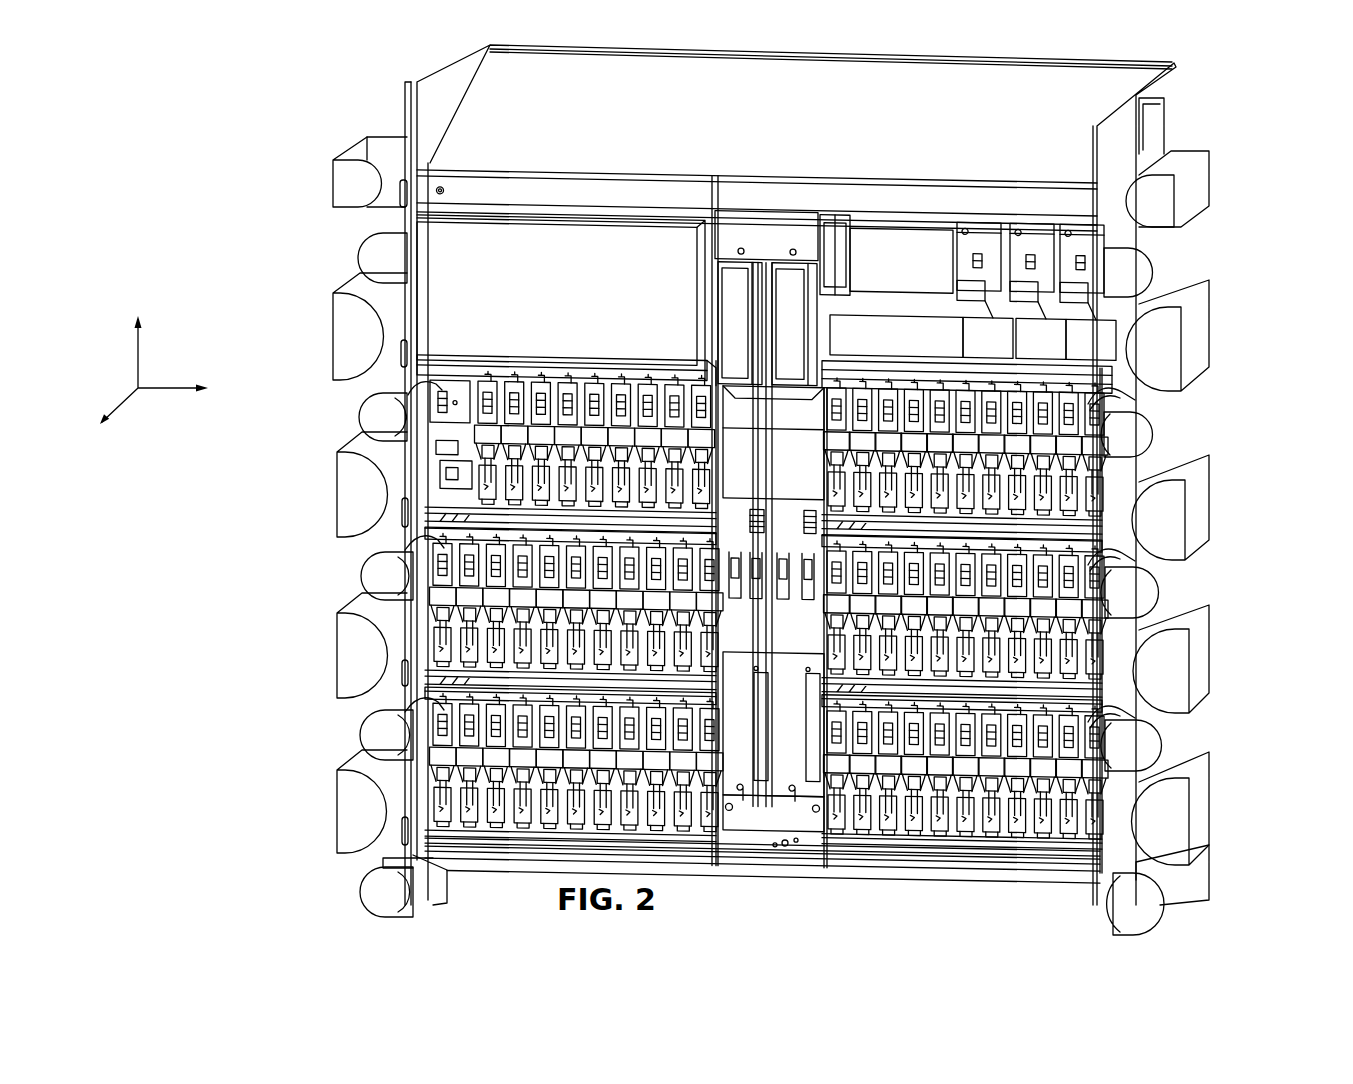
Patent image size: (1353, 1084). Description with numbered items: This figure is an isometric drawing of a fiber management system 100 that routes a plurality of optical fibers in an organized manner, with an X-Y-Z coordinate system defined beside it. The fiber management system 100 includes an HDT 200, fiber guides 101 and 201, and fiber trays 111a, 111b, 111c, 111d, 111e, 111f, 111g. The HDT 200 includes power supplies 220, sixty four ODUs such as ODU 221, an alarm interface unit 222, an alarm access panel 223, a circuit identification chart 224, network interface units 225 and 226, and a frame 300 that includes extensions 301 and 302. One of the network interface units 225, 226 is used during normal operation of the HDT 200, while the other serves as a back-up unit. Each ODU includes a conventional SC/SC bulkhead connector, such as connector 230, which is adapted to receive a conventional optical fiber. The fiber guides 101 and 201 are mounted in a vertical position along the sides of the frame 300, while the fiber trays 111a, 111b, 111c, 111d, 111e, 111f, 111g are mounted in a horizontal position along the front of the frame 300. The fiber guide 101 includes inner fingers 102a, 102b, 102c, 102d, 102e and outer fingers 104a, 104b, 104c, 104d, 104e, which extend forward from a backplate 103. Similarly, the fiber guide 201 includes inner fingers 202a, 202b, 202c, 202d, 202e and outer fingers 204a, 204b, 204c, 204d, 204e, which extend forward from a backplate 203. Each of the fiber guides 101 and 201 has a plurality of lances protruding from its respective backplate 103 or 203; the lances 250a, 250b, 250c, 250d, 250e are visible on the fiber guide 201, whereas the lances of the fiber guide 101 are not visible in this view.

The fiber management system 100 is at (228, 136).
The HDT 200 is at (658, 130).
The frame 300 is at (1167, 86).
The extension 301 is at (1148, 121).
The extension 302 is at (412, 90).
The fiber guide 201 is at (364, 129).
The backplate 203 is at (383, 860).
The fiber guide 101 is at (1189, 902).
The backplate 103 is at (1183, 150).
The inner finger 202a is at (387, 257).
The inner finger 202b is at (373, 413).
The inner finger 202c is at (380, 573).
The inner finger 202d is at (373, 742).
The inner finger 202e is at (382, 907).
The outer finger 204a is at (343, 183).
The outer finger 204b is at (353, 325).
The outer finger 204c is at (363, 480).
The outer finger 204d is at (360, 643).
The outer finger 204e is at (347, 790).
The lance 250a is at (397, 200).
The lance 250b is at (398, 360).
The lance 250c is at (400, 522).
The lance 250d is at (397, 680).
The lance 250e is at (407, 833).
The inner finger 102a is at (1139, 269).
The inner finger 102b is at (1143, 443).
The inner finger 102c is at (1142, 596).
The inner finger 102d is at (1153, 753).
The inner finger 102e is at (1149, 924).
The outer finger 104a is at (1153, 210).
The outer finger 104b is at (1164, 342).
The outer finger 104c is at (1167, 505).
The outer finger 104d is at (1167, 658).
The outer finger 104e is at (1167, 831).
The fiber tray 111a is at (1165, 405).
The fiber tray 111b is at (1185, 553).
The fiber tray 111c is at (1185, 716).
The fiber tray 111d is at (830, 862).
The fiber tray 111e is at (420, 383).
The fiber tray 111f is at (410, 518).
The fiber tray 111g is at (430, 700).
The power supplies 220 is at (1083, 230).
The ODU 221 is at (938, 390).
The alarm interface unit 222 is at (475, 383).
The alarm access panel 223 is at (530, 240).
The circuit identification chart 224 is at (838, 247).
The network interface unit 225 is at (738, 270).
The network interface unit 226 is at (797, 270).
The connector 230 is at (973, 830).